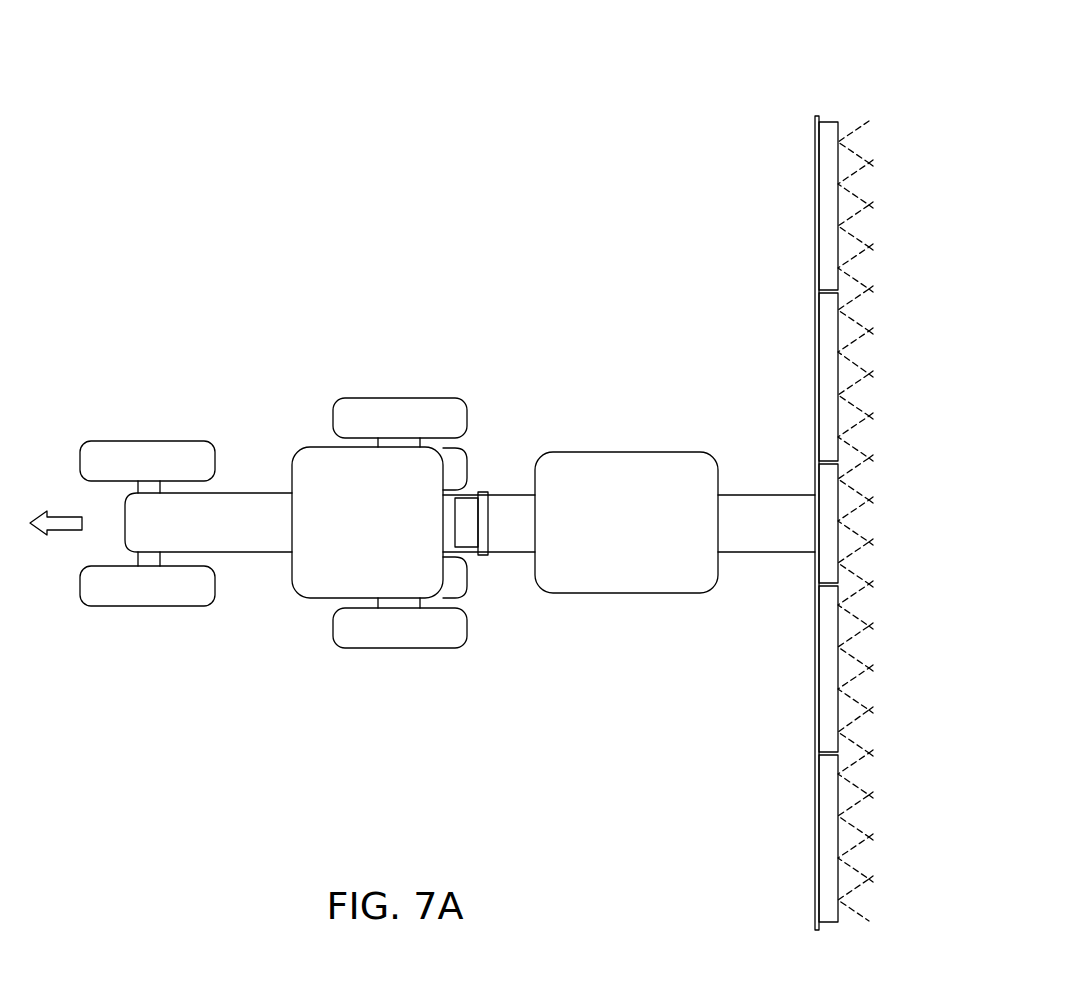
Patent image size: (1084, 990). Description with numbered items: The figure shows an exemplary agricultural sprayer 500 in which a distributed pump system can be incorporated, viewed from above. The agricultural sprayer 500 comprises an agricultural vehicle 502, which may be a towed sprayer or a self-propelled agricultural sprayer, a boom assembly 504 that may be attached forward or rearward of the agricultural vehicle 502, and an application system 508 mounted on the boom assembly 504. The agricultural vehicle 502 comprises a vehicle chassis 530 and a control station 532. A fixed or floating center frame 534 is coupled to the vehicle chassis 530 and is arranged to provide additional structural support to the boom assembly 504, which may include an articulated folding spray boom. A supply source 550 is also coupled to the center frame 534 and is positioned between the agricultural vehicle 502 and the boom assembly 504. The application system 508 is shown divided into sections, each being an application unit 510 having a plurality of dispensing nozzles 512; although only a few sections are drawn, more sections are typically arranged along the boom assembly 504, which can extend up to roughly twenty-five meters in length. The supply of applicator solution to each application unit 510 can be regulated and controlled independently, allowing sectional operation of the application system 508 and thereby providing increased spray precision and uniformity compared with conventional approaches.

The agricultural sprayer 500 is at (175, 272).
The agricultural vehicle 502 is at (112, 640).
The boom assembly 504 is at (678, 242).
The application system 508 is at (836, 115).
The application unit 510 is at (828, 195).
The dispensing nozzles 512 is at (838, 143).
The vehicle chassis 530 is at (292, 553).
The control station 532 is at (367, 522).
The center frame 534 is at (490, 494).
The supply source 550 is at (626, 522).